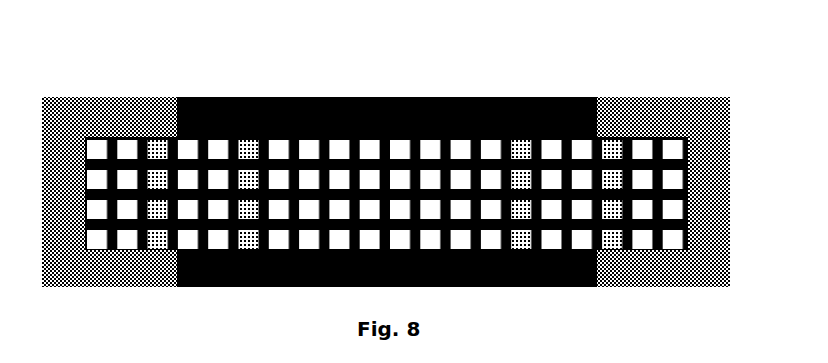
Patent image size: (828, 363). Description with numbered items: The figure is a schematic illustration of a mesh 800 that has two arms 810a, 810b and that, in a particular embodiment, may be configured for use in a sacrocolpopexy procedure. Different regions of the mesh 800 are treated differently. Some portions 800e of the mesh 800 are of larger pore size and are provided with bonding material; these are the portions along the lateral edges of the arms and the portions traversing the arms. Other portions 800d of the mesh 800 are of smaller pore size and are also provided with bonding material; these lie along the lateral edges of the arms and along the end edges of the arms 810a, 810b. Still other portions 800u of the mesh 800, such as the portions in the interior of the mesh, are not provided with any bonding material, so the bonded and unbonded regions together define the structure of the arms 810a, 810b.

The mesh 800 is at (388, 83).
The smaller pore size portions 800d is at (64, 120).
The larger pore size portions 800e is at (250, 112).
The unbonded portions 800u is at (304, 152).
The arm 810a is at (137, 93).
The arm 810b is at (593, 92).